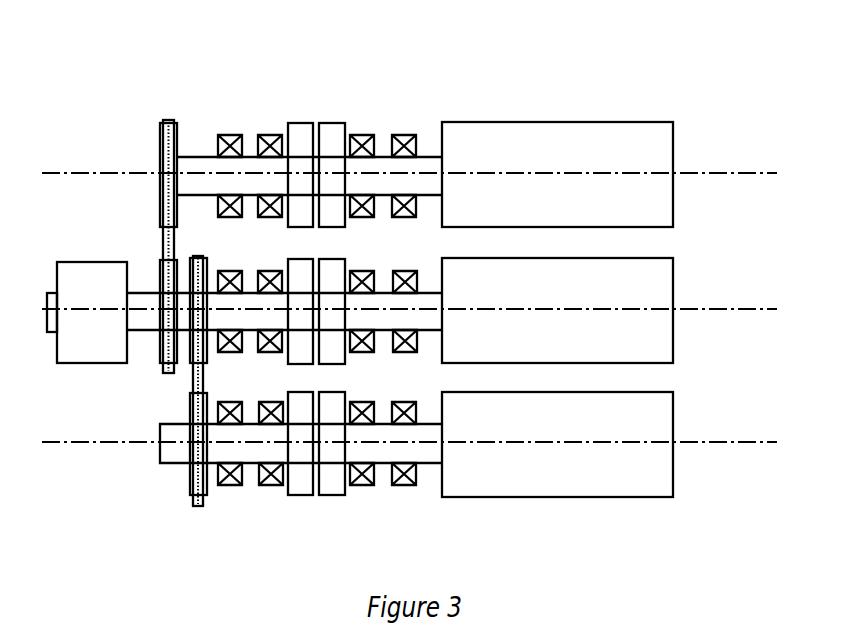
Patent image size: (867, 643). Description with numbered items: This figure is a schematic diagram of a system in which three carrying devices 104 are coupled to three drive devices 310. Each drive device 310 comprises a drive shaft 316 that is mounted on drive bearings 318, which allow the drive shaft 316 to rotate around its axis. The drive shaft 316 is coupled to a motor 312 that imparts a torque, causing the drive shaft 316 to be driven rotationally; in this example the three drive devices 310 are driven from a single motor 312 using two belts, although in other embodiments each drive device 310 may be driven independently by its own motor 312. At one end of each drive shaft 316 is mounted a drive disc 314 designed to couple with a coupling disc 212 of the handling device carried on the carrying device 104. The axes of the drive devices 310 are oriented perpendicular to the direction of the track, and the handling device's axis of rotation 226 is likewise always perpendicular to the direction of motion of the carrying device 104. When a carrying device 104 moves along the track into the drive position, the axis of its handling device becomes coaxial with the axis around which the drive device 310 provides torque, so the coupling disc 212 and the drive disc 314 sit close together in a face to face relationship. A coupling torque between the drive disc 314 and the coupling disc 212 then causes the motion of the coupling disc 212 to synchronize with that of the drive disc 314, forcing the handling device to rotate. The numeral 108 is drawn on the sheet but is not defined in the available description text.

The carrying device 104 is at (388, 506).
The motor housing 108 is at (565, 400).
The coupling disc 212 is at (333, 393).
The axis of rotation 226 is at (737, 442).
The drive device 310 is at (239, 381).
The motor 312 is at (87, 266).
The drive disc 314 is at (303, 403).
The drive shaft 316 is at (253, 458).
The drive bearings 318 is at (270, 486).